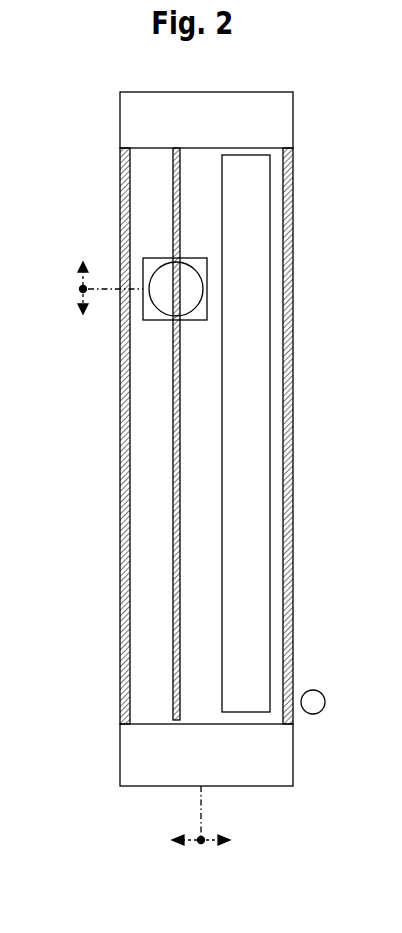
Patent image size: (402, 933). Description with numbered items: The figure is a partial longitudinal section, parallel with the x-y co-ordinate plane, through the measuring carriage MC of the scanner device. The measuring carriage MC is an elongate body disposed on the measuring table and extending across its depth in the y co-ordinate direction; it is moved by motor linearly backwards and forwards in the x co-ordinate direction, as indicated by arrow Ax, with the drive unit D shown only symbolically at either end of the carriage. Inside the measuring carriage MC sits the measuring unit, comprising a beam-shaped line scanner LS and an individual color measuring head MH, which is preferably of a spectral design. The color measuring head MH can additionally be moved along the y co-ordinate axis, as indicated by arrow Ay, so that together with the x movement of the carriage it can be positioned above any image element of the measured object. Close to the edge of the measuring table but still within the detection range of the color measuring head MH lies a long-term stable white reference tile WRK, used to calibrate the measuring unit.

The drive unit D is at (136, 121).
The measuring carriage MC is at (120, 514).
The line scanner LS is at (250, 466).
The color measuring head MH is at (160, 266).
The arrow Ay is at (80, 300).
The arrow Ax is at (208, 842).
The white reference tile WRK is at (314, 698).